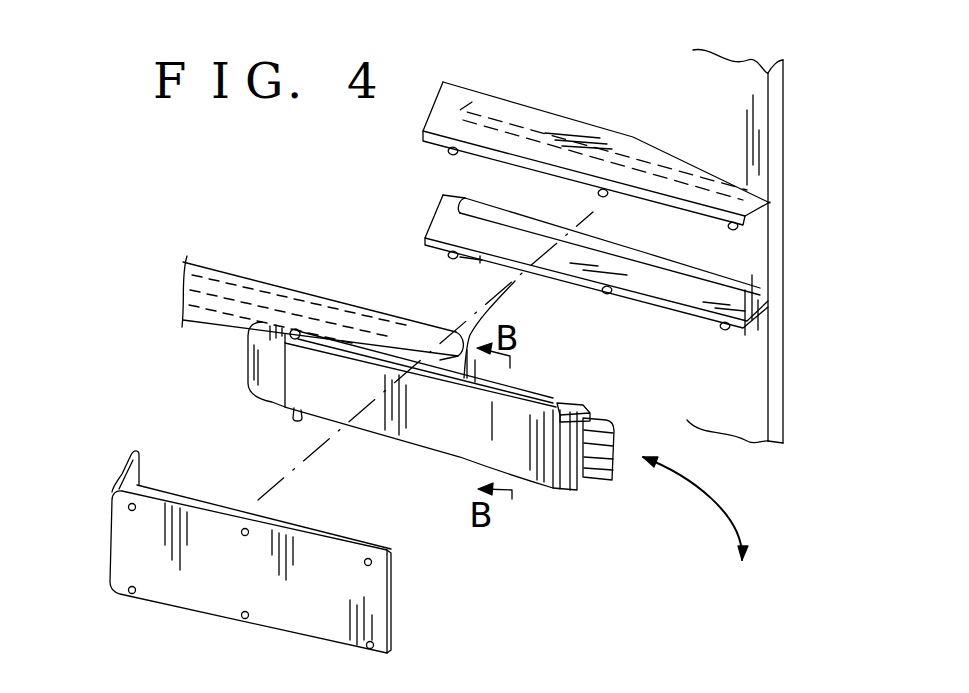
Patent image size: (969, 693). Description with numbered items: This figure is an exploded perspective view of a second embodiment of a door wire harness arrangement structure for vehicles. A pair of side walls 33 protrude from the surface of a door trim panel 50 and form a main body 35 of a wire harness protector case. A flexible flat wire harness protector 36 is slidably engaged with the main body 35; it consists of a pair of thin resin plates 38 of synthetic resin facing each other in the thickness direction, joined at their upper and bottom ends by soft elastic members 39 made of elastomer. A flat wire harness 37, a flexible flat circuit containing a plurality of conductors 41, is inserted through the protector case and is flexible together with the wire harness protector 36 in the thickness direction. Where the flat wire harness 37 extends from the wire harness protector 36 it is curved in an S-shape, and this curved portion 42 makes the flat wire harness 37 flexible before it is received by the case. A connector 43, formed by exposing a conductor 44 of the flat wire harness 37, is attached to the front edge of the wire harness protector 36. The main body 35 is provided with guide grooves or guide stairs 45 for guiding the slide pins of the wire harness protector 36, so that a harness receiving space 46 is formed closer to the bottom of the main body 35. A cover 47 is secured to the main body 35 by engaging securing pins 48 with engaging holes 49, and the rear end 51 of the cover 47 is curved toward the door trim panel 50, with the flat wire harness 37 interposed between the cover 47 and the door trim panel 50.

The side walls 33 is at (675, 184).
The main body 35 is at (627, 308).
The flexible flat wire harness protector 36 is at (438, 452).
The flat wire harness 37 is at (335, 299).
The thin resin plates 38 is at (517, 384).
The soft elastic members 39 is at (425, 356).
The conductors 41 is at (294, 422).
The curved portion 42 is at (432, 347).
The connector 43 is at (613, 479).
The conductor 44 is at (592, 481).
The guide grooves or guide stairs 45 is at (643, 267).
The harness receiving space 46 is at (555, 195).
The cover 47 is at (209, 618).
The securing pins 48 is at (448, 256).
The engaging holes 49 is at (131, 594).
The door trim panel 50 is at (790, 263).
The rear end 51 is at (125, 465).